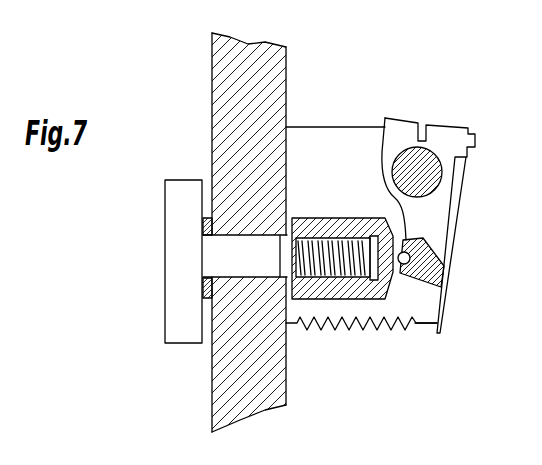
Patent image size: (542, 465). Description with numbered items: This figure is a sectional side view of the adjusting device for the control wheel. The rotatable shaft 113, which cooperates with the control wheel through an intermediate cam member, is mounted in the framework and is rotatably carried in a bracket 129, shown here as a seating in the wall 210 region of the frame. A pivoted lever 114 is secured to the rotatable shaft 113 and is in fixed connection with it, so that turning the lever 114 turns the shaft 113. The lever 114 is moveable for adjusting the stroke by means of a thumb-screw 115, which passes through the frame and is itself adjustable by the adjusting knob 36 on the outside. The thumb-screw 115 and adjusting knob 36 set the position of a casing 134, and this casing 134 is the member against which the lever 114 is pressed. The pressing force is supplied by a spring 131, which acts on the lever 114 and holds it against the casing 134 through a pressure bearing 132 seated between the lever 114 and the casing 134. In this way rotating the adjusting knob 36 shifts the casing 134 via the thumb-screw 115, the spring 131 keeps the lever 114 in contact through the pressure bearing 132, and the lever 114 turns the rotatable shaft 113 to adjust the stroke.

The wall 210 is at (220, 83).
The adjusting knob 36 is at (175, 333).
The thumb-screw 115 is at (225, 265).
The casing 134 is at (300, 300).
The spring 131 is at (337, 328).
The bracket 129 is at (332, 143).
The pivoted lever 114 is at (447, 163).
The rotatable shaft 113 is at (401, 146).
The pressure bearing 132 is at (410, 258).